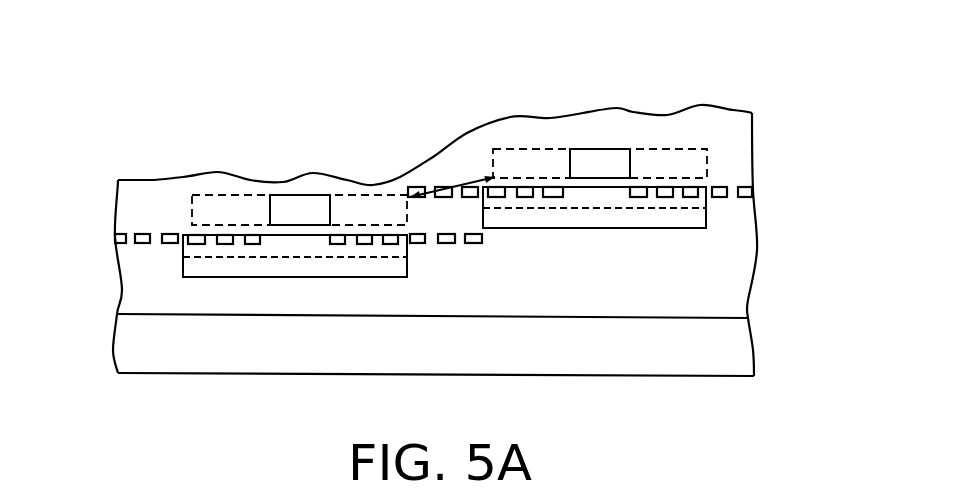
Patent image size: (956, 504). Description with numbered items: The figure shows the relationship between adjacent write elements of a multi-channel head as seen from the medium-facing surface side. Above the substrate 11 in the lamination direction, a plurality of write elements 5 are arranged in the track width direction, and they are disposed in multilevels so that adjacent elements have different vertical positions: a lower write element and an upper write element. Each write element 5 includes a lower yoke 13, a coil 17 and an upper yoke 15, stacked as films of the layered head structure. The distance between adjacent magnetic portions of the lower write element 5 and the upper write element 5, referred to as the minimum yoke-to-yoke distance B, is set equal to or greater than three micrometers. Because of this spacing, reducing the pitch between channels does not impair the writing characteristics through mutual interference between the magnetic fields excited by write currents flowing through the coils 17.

The substrate 11 is at (130, 347).
The lower yoke 13 is at (172, 263).
The upper yoke 15 is at (348, 193).
The coil 17 is at (143, 233).
The write element 5 is at (177, 220).
The yoke-to-yoke distance B is at (458, 185).